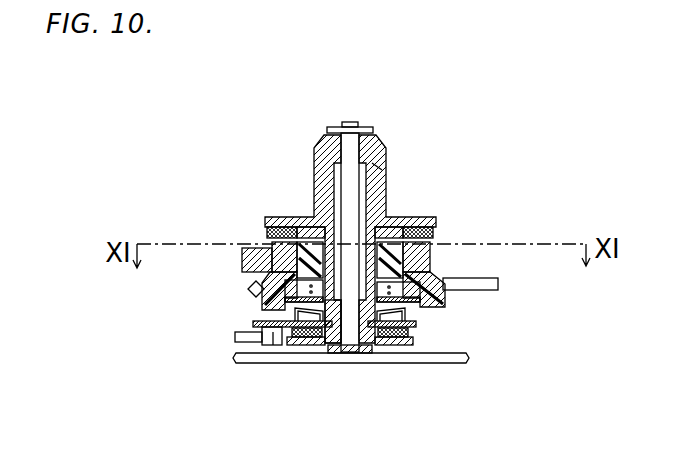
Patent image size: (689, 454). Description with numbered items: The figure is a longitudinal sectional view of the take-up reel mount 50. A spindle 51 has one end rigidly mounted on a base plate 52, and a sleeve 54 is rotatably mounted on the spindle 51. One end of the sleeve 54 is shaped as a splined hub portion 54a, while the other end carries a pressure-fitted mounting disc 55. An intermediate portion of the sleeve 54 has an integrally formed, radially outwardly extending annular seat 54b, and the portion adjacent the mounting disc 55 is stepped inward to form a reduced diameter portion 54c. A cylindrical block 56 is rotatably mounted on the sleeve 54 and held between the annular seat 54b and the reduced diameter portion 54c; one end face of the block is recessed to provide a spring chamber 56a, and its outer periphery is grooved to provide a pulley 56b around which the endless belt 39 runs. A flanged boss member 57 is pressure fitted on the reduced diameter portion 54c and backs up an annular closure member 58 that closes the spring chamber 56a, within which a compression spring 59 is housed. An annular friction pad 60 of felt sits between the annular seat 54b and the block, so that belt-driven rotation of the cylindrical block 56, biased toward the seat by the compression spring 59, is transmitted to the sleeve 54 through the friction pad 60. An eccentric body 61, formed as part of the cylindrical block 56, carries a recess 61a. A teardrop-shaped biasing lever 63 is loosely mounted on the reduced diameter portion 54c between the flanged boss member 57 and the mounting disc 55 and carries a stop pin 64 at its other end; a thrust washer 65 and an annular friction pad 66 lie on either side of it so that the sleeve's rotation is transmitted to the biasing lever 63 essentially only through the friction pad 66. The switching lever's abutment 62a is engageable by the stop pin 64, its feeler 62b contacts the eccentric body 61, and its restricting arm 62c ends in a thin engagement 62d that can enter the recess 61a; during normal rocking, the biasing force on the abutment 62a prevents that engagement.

The endless belt 39 is at (498, 288).
The take-up reel mount 50 is at (379, 128).
The spindle 51 is at (351, 148).
The base plate 52 is at (286, 363).
The sleeve 54 is at (432, 215).
The splined hub portion 54a is at (388, 163).
The annular seat 54b is at (442, 230).
The reduced diameter portion 54c is at (366, 353).
The mounting disc 55 is at (336, 346).
The cylindrical block 56 is at (425, 250).
The spring chamber 56a is at (440, 307).
The pulley 56b is at (446, 292).
The flanged boss member 57 is at (318, 346).
The annular closure member 58 is at (256, 323).
The compression spring 59 is at (262, 301).
The annular friction pad 60 is at (270, 228).
The eccentric body 61 is at (262, 246).
The recess 61a is at (300, 224).
The abutment 62a is at (237, 338).
The feeler 62b is at (432, 256).
The restricting arm 62c is at (242, 262).
The engagement 62d is at (272, 247).
The biasing lever 63 is at (396, 338).
The stop pin 64 is at (273, 345).
The thrust washer 65 is at (412, 327).
The annular friction pad 66 is at (438, 330).